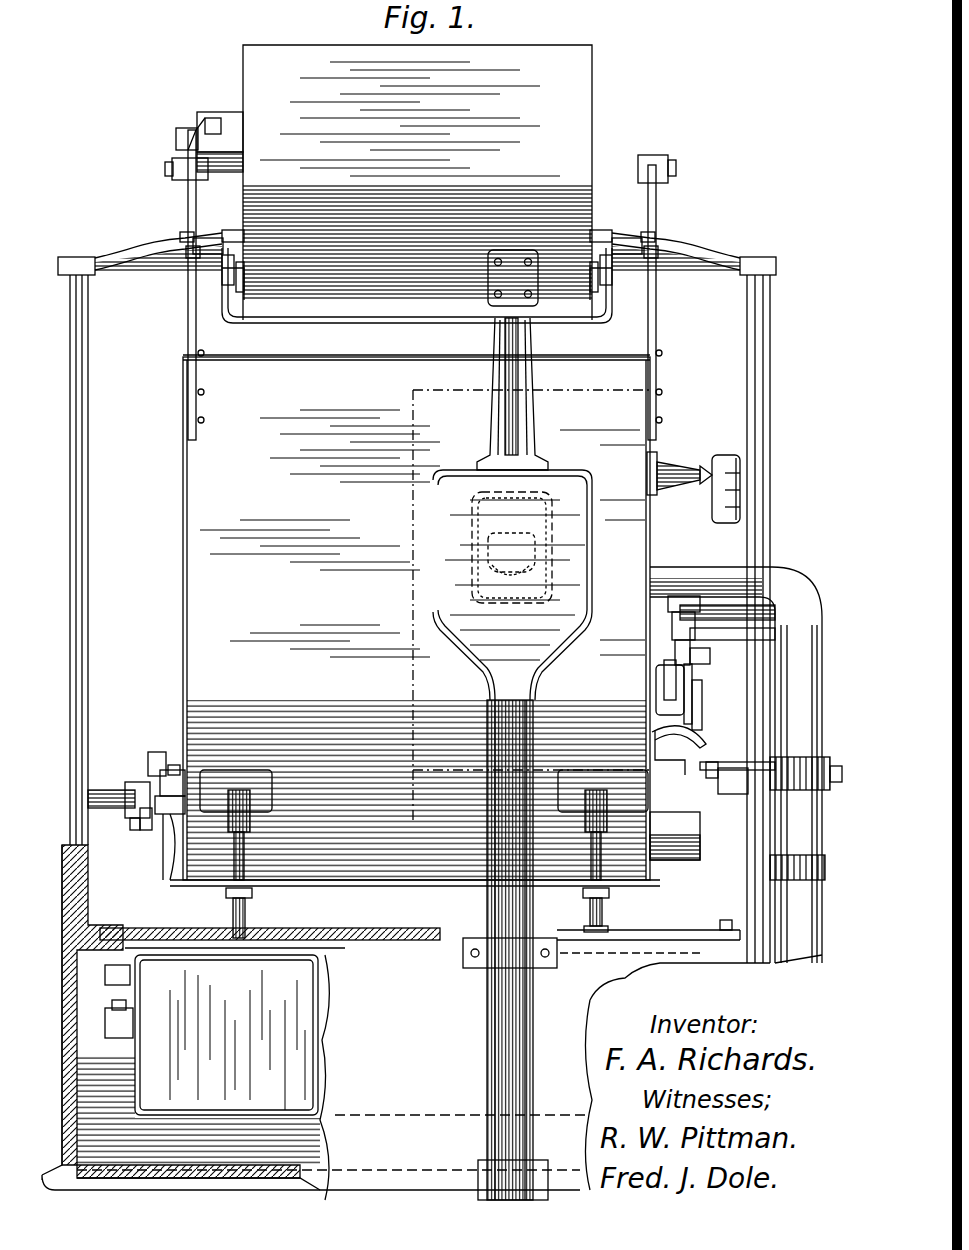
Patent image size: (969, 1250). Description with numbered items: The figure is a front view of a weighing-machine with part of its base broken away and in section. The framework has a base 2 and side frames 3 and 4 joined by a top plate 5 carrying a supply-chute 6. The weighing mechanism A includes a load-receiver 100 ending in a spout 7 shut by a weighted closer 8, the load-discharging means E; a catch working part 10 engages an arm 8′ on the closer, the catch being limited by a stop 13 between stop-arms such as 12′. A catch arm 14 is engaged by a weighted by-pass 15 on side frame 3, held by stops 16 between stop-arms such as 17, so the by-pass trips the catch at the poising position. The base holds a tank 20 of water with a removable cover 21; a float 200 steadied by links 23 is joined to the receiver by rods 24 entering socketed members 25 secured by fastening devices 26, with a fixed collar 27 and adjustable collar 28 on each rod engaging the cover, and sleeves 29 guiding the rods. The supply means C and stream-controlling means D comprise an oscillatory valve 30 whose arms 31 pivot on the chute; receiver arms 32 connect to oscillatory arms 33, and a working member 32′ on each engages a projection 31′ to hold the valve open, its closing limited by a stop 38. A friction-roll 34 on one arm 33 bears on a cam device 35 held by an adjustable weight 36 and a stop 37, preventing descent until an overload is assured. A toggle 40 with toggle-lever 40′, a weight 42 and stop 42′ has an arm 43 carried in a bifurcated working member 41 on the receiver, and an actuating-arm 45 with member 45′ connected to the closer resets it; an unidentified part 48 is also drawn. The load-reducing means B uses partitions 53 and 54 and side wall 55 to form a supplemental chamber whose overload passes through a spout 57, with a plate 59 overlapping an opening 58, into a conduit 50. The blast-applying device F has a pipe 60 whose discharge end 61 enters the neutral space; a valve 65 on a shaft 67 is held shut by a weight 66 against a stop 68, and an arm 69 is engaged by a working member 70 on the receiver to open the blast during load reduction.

The base 2 is at (406, 1022).
The side frame 3 is at (87, 551).
The side frame 4 is at (746, 372).
The top plate 5 is at (120, 252).
The supply-chute 6 is at (330, 296).
The spout formation 7 is at (396, 855).
The closer 8 is at (322, 885).
The arm 8′ is at (172, 804).
The working part 10 is at (156, 752).
The stop-arm 12′ is at (176, 768).
The stop 13 is at (183, 776).
The arm 14 is at (143, 830).
The by-pass 15 is at (132, 782).
The stops 16 is at (118, 806).
The stop-arm 17 is at (130, 822).
The tank 20 is at (76, 1030).
The removable cover 21 is at (420, 929).
The links 23 is at (128, 1030).
The rods 24 is at (232, 910).
The socketed members 25 is at (250, 802).
The fastening devices 26 is at (246, 836).
The collar 27 is at (582, 955).
The collar 28 is at (250, 893).
The sleeves 29 is at (658, 925).
The oscillatory valve 30 is at (417, 341).
The valve arms 31 is at (224, 282).
The projection 31′ is at (202, 238).
The receiver arms 32 is at (186, 305).
The working member 32′ is at (192, 256).
The oscillatory arms 33 is at (172, 172).
The friction-roll 34 is at (198, 128).
The cam device 35 is at (176, 140).
The adjustable weight 36 is at (238, 118).
The stop 37 is at (213, 118).
The stop 38 is at (244, 275).
The toggle 40 is at (662, 606).
The toggle-lever 40′ is at (664, 635).
The working member 41 is at (660, 660).
The weight 42 is at (672, 592).
The stop 42′ is at (714, 620).
The arm 43 is at (655, 700).
The actuating-arm 45 is at (666, 751).
The member 45′ is at (702, 714).
The pin 48 is at (708, 656).
The conduit 50 is at (440, 580).
The partition 53 is at (470, 492).
The partition 54 is at (655, 465).
The side wall 55 is at (475, 530).
The spout 57 is at (505, 538).
The opening 58 is at (495, 572).
The closer plate 59 is at (480, 492).
The conduit pipe 60 is at (790, 950).
The discharge end 61 is at (718, 566).
The valve 65 is at (790, 757).
The weight 66 is at (732, 794).
The shaft 67 is at (812, 758).
The stop 68 is at (745, 790).
The arm 69 is at (718, 770).
The working member 70 is at (702, 750).
The load-receiver 100 is at (200, 458).
The float 200 is at (150, 972).
The weighing mechanism A is at (156, 565).
The load-reducing means B is at (226, 1035).
The load supply means C is at (417, 182).
The stream-controlling means D is at (405, 289).
The load-discharging means E is at (675, 844).
The blast-applying device F is at (830, 814).